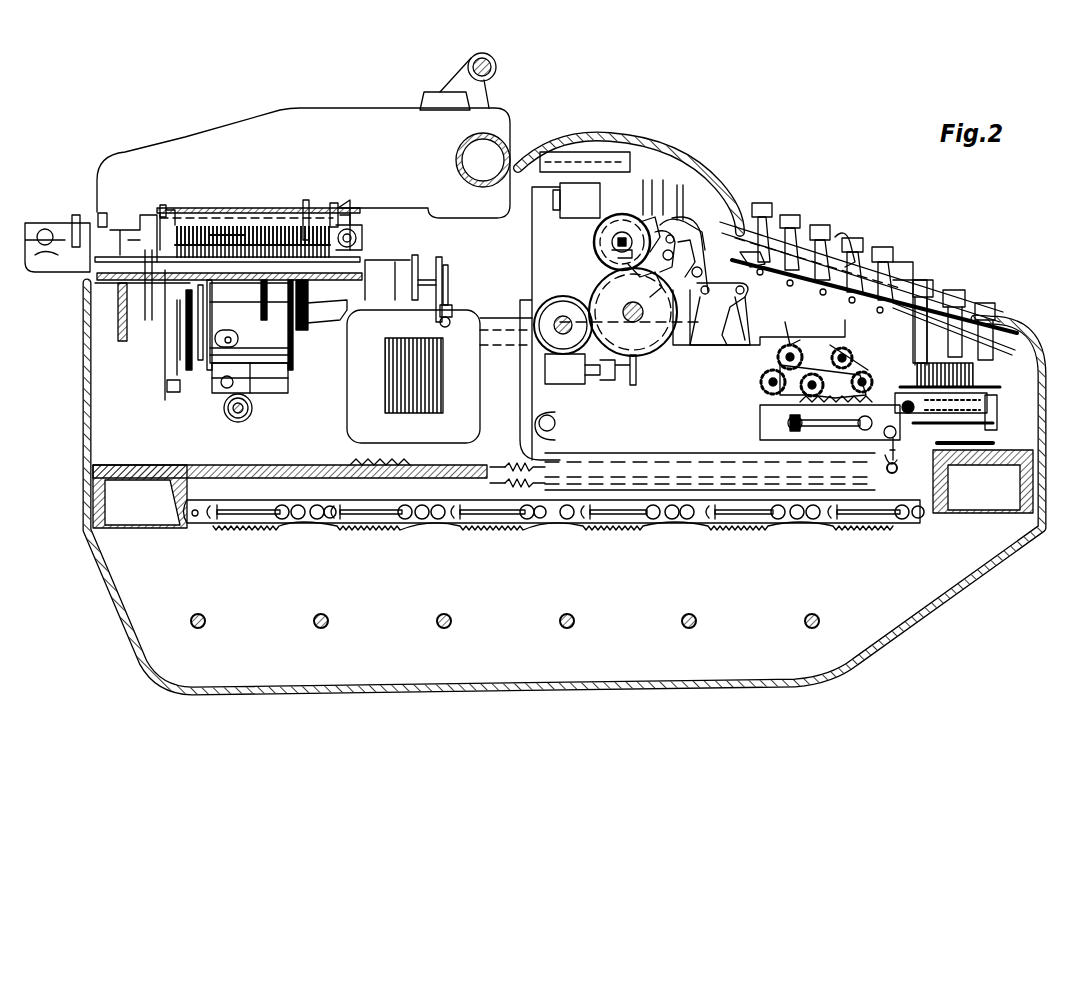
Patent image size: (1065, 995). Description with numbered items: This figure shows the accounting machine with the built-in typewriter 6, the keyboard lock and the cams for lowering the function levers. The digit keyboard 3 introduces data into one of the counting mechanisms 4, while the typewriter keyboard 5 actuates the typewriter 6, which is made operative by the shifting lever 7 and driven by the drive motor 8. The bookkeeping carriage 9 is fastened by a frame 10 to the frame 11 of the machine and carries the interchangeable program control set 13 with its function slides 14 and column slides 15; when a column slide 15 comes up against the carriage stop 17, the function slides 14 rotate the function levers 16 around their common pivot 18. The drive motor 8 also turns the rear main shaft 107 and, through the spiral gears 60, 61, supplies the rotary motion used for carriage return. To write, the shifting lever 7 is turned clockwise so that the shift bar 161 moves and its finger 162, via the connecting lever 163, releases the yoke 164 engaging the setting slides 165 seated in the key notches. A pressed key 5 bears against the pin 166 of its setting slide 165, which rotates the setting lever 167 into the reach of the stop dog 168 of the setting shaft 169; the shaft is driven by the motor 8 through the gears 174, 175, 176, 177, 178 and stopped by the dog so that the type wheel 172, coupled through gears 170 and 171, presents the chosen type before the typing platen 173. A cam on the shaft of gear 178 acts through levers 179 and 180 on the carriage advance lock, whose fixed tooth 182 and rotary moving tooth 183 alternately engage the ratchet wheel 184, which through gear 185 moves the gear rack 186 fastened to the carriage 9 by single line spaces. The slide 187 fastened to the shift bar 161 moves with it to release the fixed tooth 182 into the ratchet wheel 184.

The digit keyboard 3 is at (957, 307).
The counting mechanisms 4 is at (772, 385).
The typewriter keyboard 5 is at (827, 227).
The built-in typewriter 6 is at (619, 232).
The shifting lever 7 is at (837, 237).
The drive motor 8 is at (360, 380).
The bookkeeping carriage 9 is at (122, 172).
The frame 10 is at (377, 247).
The frame of the machine 11 is at (115, 303).
The interchangeable program control set 13 is at (182, 215).
The function slides 14 is at (240, 240).
The column slides 15 is at (337, 227).
The function levers 16 is at (235, 238).
The carriage stop 17 is at (320, 243).
The common pivot 18 is at (173, 247).
The spiral gear 60 is at (240, 387).
The spiral gear 61 is at (240, 417).
The rear main shaft 107 is at (233, 407).
The shift bar 161 is at (708, 343).
The finger 162 is at (782, 247).
The connecting lever 163 is at (757, 283).
The yoke 164 is at (723, 280).
The setting slides 165 is at (687, 275).
The pin 166 is at (887, 260).
The setting lever 167 is at (670, 239).
The stop dog 168 is at (620, 222).
The setting shaft 169 is at (609, 229).
The gear 170 is at (632, 222).
The gear 171 is at (635, 224).
The type wheel 172 is at (570, 153).
The typing platen 173 is at (500, 140).
The gear 174 is at (633, 387).
The gear 175 is at (697, 275).
The gear 176 is at (690, 262).
The gear 177 is at (652, 215).
The gear 178 is at (652, 197).
The lever 179 is at (735, 323).
The lever 180 is at (503, 337).
The fixed tooth 182 is at (452, 253).
The rotary moving tooth 183 is at (447, 320).
The ratchet wheel 184 is at (438, 253).
The gear 185 is at (407, 253).
The gear rack 186 is at (440, 267).
The slide 187 is at (437, 273).